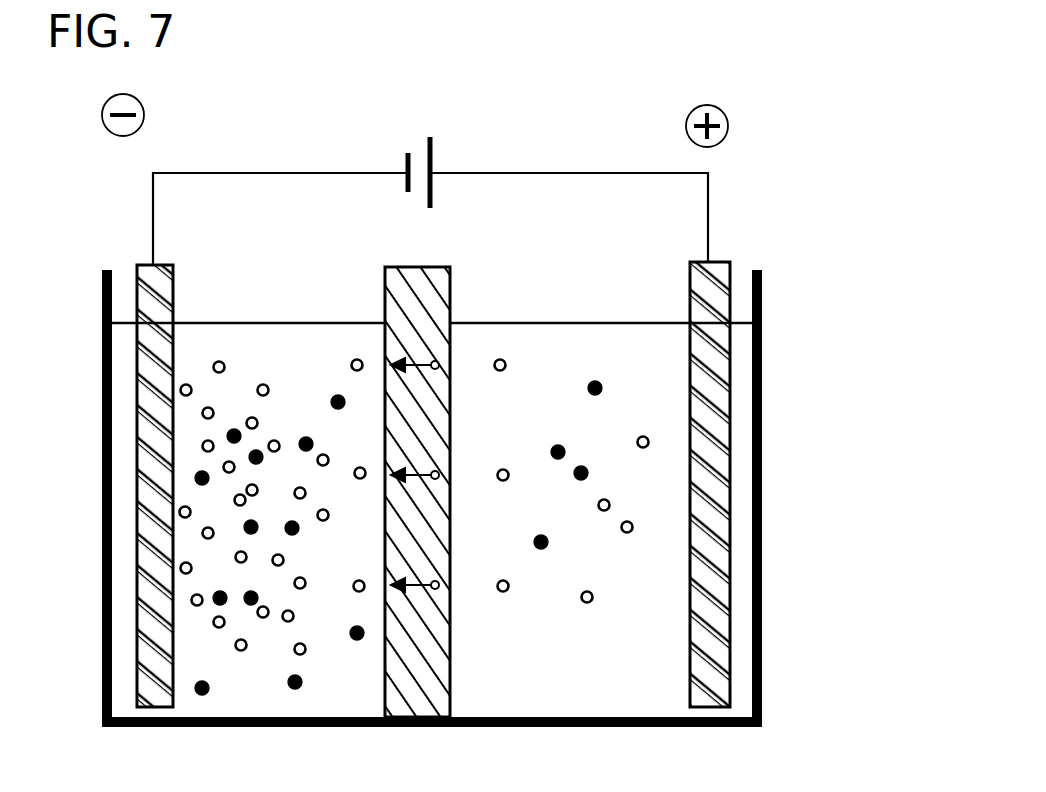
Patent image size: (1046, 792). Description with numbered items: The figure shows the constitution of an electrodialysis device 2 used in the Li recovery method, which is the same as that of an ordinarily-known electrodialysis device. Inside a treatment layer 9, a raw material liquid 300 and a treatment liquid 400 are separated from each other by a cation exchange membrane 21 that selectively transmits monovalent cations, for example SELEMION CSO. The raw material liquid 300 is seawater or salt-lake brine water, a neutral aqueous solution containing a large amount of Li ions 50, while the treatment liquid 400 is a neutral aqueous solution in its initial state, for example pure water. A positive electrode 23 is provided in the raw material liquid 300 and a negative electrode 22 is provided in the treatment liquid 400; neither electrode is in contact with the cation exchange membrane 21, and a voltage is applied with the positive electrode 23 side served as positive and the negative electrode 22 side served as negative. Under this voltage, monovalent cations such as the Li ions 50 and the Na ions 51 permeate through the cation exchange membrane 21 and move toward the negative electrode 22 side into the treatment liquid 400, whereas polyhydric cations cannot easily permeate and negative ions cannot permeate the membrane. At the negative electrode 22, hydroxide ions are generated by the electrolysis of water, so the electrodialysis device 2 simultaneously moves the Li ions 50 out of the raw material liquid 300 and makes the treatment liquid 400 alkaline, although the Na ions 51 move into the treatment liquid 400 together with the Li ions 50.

The electrodialysis device 2 is at (841, 718).
The treatment layer 9 is at (762, 485).
The cation exchange membrane 21 is at (435, 286).
The negative electrode 22 is at (167, 268).
The positive electrode 23 is at (720, 263).
The Li ions 50 is at (263, 384).
The Na ions 51 is at (338, 395).
The raw material liquid 300 is at (642, 358).
The treatment liquid 400 is at (216, 350).